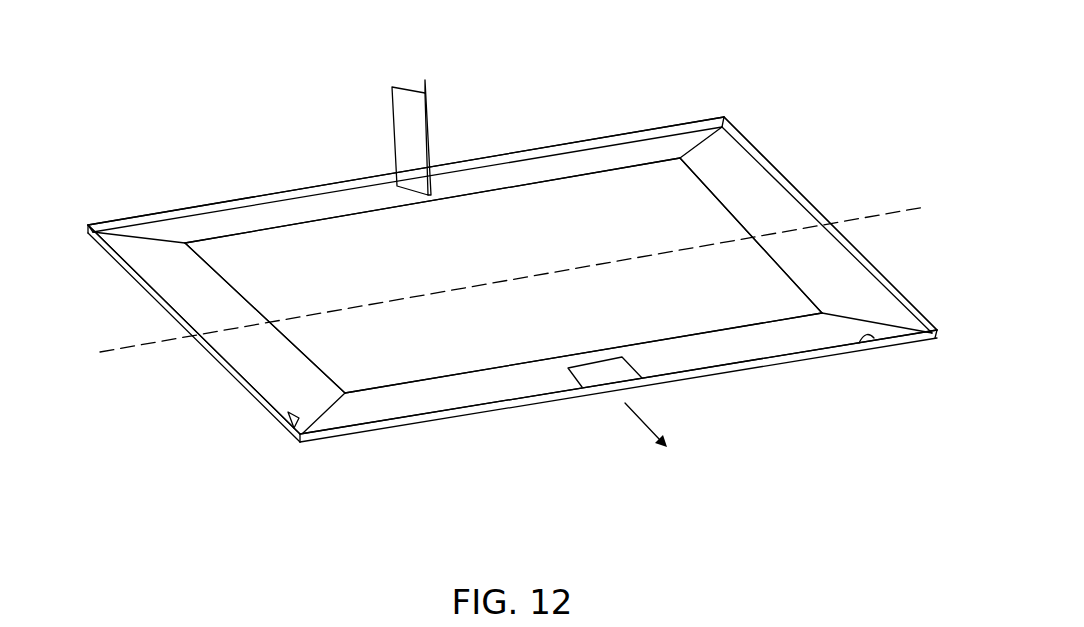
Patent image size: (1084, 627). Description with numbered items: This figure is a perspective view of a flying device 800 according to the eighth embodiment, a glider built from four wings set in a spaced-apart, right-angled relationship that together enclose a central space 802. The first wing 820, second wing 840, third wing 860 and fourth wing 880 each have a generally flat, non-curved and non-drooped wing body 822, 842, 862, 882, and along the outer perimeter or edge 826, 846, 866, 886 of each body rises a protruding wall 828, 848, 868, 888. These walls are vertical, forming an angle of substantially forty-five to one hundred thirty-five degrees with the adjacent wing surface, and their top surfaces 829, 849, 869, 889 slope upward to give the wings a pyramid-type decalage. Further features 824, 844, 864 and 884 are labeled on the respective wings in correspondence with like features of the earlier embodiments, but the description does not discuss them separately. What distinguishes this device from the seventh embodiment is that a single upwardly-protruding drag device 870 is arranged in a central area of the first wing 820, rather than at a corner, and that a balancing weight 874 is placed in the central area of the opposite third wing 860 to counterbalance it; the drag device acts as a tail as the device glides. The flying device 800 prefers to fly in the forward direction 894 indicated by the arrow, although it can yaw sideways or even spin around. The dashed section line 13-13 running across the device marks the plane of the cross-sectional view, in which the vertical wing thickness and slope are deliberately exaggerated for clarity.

The flying device 800 is at (172, 62).
The space 802 is at (646, 206).
The section line 13- 13 is at (100, 352).
The first wing 820 is at (208, 174).
The wing body 822 is at (265, 232).
The floor edge 824 is at (355, 217).
The outer edge 826 is at (295, 198).
The protruding wall 828 is at (517, 157).
The top surface 829 is at (550, 168).
The upwardly-protruding drag device 870 is at (392, 142).
The second wing 840 is at (887, 250).
The wing body 842 is at (740, 200).
The floor right edge 844 is at (760, 252).
The outer edge 846 is at (833, 250).
The protruding wall 848 is at (893, 282).
The top surface 849 is at (760, 198).
The third wing 860 is at (807, 376).
The wing body 862 is at (718, 347).
The floor front edge 864 is at (637, 343).
The outer edge 866 is at (866, 341).
The protruding wall 868 is at (724, 368).
The top surface 869 is at (465, 395).
The balancing weight 874 is at (606, 373).
The fourth wing 880 is at (207, 372).
The wing body 882 is at (291, 358).
The wall corner edge 884 is at (333, 375).
The outer edge 886 is at (292, 415).
The protruding wall 888 is at (112, 248).
The top surface 889 is at (257, 372).
The forward direction 894 is at (642, 425).